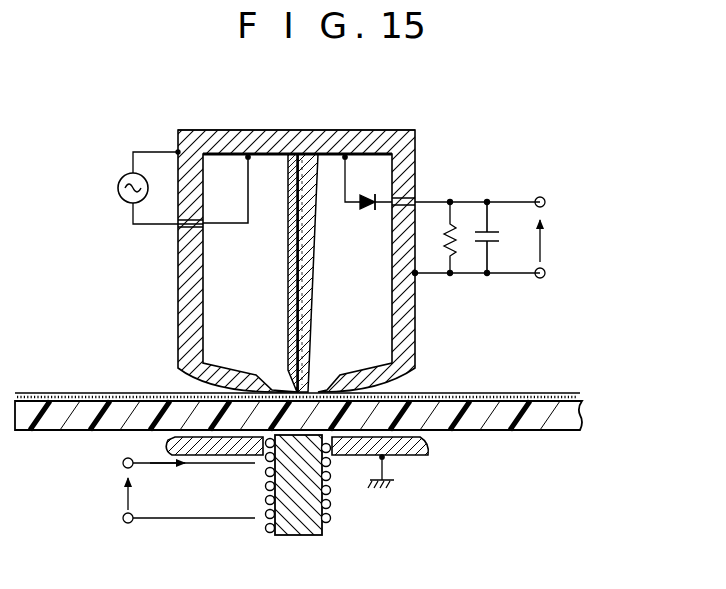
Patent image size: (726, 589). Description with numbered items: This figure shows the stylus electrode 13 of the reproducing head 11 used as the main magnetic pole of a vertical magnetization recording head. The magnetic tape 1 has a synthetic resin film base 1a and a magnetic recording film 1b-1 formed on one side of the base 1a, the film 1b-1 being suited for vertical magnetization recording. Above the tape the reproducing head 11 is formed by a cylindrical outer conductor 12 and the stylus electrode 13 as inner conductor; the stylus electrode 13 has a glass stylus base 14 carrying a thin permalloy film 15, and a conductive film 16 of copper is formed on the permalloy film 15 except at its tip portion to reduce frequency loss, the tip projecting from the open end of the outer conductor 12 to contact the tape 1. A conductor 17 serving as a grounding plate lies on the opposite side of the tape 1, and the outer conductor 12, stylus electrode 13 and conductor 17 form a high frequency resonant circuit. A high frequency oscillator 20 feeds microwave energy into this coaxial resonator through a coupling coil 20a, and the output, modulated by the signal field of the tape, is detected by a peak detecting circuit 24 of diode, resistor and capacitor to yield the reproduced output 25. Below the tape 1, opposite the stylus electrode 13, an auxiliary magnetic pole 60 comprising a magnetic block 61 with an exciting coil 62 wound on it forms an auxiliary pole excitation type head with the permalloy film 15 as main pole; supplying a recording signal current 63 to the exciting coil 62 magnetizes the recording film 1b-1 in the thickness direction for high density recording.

The magnetic tape 1 is at (323, 371).
The synthetic resin film base 1a is at (575, 417).
The magnetic recording film 1b-1 is at (560, 393).
The reproducing head 11 is at (168, 301).
The cylindrical outer conductor 12 is at (258, 130).
The stylus electrode 13 is at (258, 273).
The stylus base 14 is at (308, 250).
The permalloy film 15 is at (292, 275).
The conductive film 16 is at (291, 307).
The conductor 17 is at (429, 450).
The high frequency oscillator 20 is at (118, 188).
The coupling coil 20a is at (221, 224).
The peak detecting circuit 24 is at (474, 190).
The reproduced output 25 is at (542, 238).
The auxiliary magnetic pole 60 is at (300, 512).
The magnetic block 61 is at (300, 537).
The exciting coil 62 is at (331, 505).
The recording signal current 63 is at (126, 496).